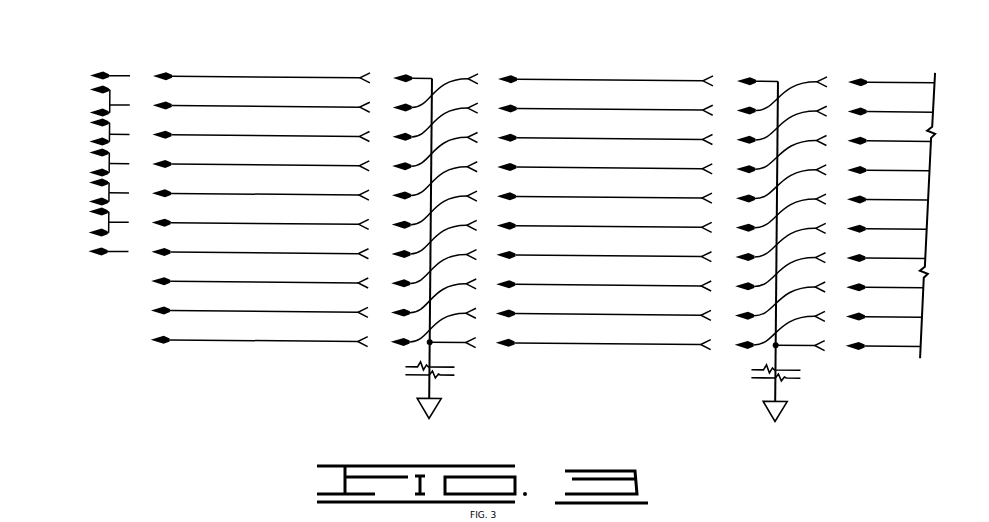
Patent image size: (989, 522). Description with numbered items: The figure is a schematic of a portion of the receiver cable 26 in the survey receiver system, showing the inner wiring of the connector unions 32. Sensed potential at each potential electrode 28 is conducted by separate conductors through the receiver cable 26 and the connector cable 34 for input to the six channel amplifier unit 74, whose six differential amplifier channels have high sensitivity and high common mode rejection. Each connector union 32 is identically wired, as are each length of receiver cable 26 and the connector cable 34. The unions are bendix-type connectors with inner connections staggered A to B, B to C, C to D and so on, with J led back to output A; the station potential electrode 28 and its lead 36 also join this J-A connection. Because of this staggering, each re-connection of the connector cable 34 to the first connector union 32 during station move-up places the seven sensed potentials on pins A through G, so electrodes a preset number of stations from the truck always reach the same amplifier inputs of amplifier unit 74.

The amplifier unit 74 is at (83, 135).
The connector cable 34 is at (278, 360).
The connector union 32 is at (455, 51).
The receiver cable 26 is at (606, 378).
The electrode lead 36 is at (433, 388).
The potential electrode 28 is at (440, 407).